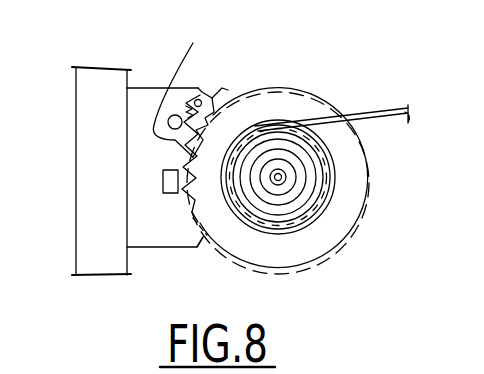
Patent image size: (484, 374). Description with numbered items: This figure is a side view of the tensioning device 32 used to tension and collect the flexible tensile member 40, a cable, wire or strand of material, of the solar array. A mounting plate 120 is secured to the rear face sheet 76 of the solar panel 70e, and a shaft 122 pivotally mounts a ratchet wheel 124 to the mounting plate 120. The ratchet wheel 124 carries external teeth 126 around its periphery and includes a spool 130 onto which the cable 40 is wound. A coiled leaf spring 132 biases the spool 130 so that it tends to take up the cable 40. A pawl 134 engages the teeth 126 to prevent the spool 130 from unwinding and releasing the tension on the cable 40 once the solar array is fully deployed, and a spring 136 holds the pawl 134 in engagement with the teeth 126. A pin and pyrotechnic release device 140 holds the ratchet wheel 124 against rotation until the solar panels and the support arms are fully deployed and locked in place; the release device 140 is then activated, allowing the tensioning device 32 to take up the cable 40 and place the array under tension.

The solar panel 70e is at (98, 80).
The tensioning device 32 is at (148, 66).
The pawl 134 is at (188, 79).
The spring 136 is at (213, 87).
The flexible tensile member 40 is at (360, 110).
The rear face sheet 76 is at (135, 125).
The pin and pyrotechnic release device 140 is at (163, 183).
The mounting plate 120 is at (142, 217).
The external teeth 126 is at (190, 215).
The shaft 122 is at (278, 177).
The spool 130 is at (327, 195).
The ratchet wheel 124 is at (330, 235).
The coiled leaf spring 132 is at (289, 215).